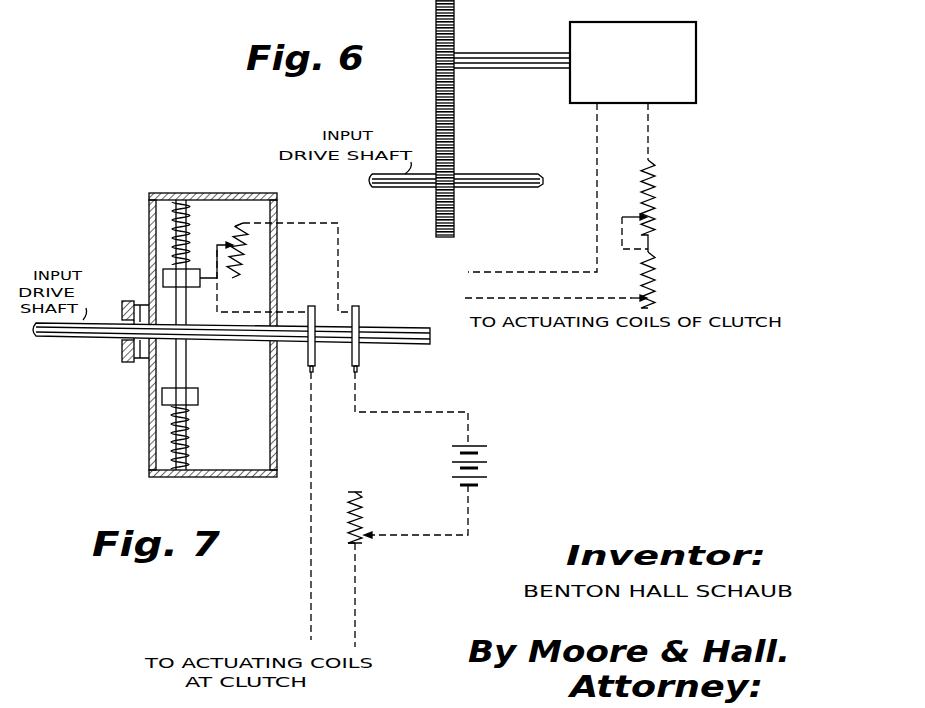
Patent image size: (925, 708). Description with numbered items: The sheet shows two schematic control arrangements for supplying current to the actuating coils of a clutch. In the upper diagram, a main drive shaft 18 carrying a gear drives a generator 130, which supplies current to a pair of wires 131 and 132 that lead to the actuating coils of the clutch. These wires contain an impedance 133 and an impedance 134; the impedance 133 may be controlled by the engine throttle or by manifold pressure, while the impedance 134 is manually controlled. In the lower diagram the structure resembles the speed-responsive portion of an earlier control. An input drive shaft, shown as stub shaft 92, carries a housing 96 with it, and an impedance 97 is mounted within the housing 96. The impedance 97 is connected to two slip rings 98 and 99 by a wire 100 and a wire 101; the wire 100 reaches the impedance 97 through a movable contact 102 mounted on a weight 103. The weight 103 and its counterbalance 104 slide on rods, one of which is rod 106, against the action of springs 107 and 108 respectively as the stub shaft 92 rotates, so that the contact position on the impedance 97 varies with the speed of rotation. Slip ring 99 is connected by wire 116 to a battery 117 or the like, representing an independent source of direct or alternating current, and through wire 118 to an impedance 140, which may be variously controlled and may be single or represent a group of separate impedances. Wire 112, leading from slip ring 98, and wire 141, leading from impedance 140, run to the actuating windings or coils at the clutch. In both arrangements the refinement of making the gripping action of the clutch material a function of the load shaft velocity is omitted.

In FIG. 6, the main drive shaft 18 is at (488, 172).
In FIG. 6, the generator 130 is at (694, 37).
In FIG. 6, the wire 131 is at (598, 138).
In FIG. 6, the wire 132 is at (651, 138).
In FIG. 6, the impedance 133 is at (652, 223).
In FIG. 6, the impedance 134 is at (656, 303).
In FIG. 7, the stub shaft 92 is at (103, 339).
In FIG. 7, the housing 96 is at (150, 215).
In FIG. 7, the impedance 97 is at (249, 250).
In FIG. 7, the slip ring 98 is at (319, 296).
In FIG. 7, the slip ring 99 is at (360, 306).
In FIG. 7, the wire 100 is at (262, 281).
In FIG. 7, the wire 101 is at (340, 263).
In FIG. 7, the movable contact 102 is at (221, 230).
In FIG. 7, the weight 103 is at (163, 278).
In FIG. 7, the counterbalance 104 is at (199, 396).
In FIG. 7, the rod 106 is at (190, 446).
In FIG. 7, the spring 107 is at (191, 213).
In FIG. 7, the spring 108 is at (190, 422).
In FIG. 7, the wire 112 is at (306, 497).
In FIG. 7, the wire 116 is at (405, 413).
In FIG. 7, the battery 117 is at (482, 473).
In FIG. 7, the wire 118 is at (470, 528).
In FIG. 7, the impedance 140 is at (364, 521).
In FIG. 7, the wire 141 is at (357, 612).